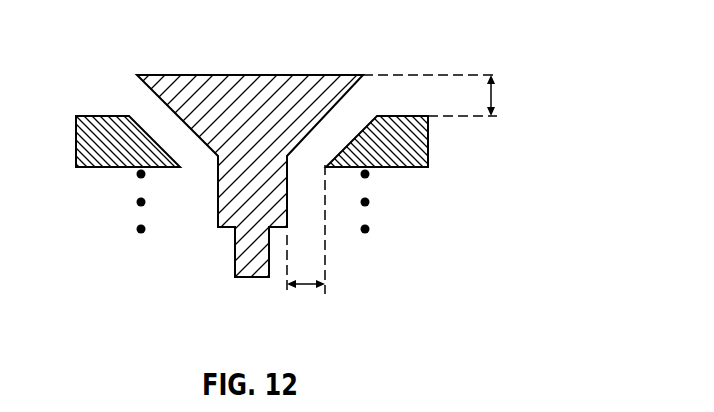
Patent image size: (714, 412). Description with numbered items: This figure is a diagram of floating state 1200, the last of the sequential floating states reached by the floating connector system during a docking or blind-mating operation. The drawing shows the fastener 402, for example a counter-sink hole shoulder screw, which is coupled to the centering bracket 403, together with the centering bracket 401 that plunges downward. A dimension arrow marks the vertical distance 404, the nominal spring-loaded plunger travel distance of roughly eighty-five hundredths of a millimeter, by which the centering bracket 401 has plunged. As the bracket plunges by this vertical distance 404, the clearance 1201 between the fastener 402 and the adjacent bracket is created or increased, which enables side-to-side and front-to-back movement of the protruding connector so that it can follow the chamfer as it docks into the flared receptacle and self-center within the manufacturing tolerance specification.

The floating state 1200 is at (197, 54).
The centering bracket 401 is at (417, 158).
The fastener 402 is at (240, 255).
The centering bracket 403 is at (371, 202).
The spring-loaded plunger travel distance 404 is at (491, 95).
The clearance 1201 is at (307, 288).